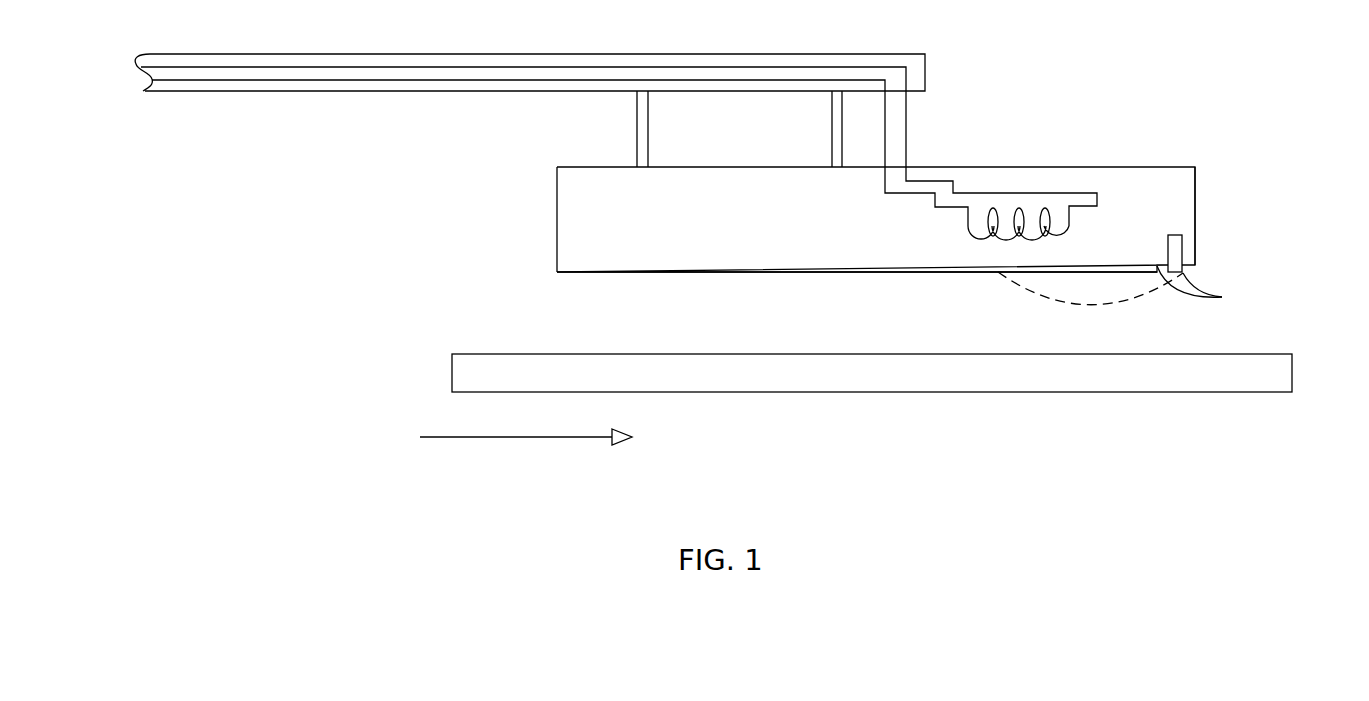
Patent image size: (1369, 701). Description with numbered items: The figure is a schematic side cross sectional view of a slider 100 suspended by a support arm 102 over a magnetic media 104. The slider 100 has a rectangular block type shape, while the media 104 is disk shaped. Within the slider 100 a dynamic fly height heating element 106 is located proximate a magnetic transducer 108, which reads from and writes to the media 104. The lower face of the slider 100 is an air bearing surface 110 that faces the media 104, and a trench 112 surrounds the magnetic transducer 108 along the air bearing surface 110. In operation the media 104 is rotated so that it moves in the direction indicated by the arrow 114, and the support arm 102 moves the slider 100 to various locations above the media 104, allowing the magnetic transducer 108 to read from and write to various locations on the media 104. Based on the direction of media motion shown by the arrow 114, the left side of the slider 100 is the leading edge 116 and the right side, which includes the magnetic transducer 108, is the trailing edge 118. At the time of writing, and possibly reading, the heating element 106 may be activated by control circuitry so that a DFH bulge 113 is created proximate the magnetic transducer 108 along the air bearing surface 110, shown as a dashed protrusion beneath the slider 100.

The slider 100 is at (1157, 167).
The support arm 102 is at (871, 53).
The magnetic media 104 is at (1260, 354).
The dynamic fly height heating element 106 is at (970, 218).
The magnetic transducer 108 is at (1168, 245).
The air bearing surface 110 is at (806, 272).
The trench 112 is at (1222, 297).
The DFH bulge 113 is at (1038, 293).
The arrow 114 is at (497, 437).
The leading edge 116 is at (557, 212).
The trailing edge 118 is at (1195, 208).